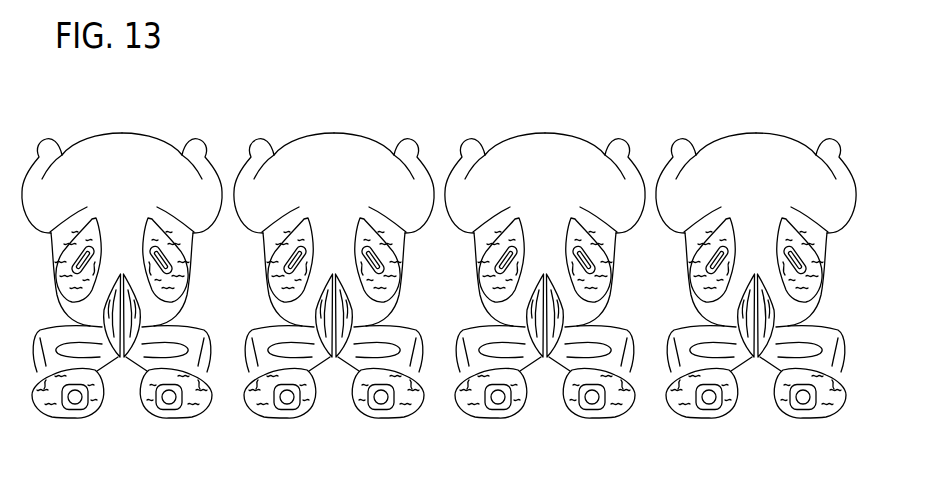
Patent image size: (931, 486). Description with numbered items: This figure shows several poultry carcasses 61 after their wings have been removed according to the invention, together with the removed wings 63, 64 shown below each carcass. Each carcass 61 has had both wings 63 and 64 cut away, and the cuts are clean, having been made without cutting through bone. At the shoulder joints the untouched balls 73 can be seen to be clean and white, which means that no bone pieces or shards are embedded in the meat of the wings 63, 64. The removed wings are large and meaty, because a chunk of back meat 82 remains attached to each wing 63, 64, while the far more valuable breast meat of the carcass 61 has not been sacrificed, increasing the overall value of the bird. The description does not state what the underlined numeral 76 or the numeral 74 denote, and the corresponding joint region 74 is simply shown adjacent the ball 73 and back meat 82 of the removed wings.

The poultry carcass 61 is at (127, 152).
The processed carcass portion 76 is at (562, 195).
The wing 64 is at (263, 343).
The wing 63 is at (408, 342).
The back meat 82 is at (260, 403).
The left leg bone 74 is at (285, 402).
The ball of the shoulder joint 73 is at (382, 402).